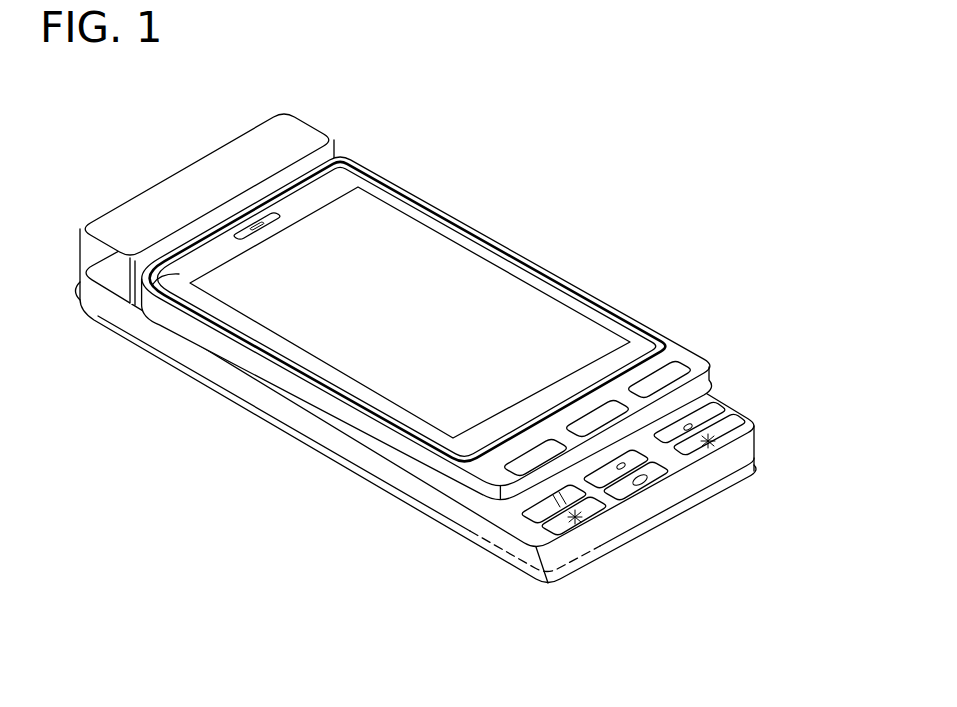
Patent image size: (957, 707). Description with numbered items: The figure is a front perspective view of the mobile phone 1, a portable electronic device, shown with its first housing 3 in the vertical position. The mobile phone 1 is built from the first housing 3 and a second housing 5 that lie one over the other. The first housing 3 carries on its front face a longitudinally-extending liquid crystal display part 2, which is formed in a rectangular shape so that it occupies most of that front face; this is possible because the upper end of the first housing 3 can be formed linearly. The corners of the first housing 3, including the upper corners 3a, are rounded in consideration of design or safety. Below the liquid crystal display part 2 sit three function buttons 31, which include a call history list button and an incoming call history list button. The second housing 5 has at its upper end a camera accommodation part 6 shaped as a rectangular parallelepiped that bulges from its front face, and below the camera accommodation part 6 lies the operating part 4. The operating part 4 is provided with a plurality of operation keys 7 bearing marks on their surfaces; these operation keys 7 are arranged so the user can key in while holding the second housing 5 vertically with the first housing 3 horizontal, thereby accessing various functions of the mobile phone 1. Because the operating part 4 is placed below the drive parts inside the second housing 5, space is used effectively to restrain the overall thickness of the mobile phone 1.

The mobile phone 1 is at (564, 160).
The liquid crystal display part 2 is at (423, 327).
The first housing 3 is at (413, 371).
The upper corners 3a is at (153, 284).
The function buttons 31 is at (520, 463).
The operating part 4 is at (608, 510).
The second housing 5 is at (753, 423).
The camera accommodation part 6 is at (298, 138).
The operation keys 7 is at (662, 468).